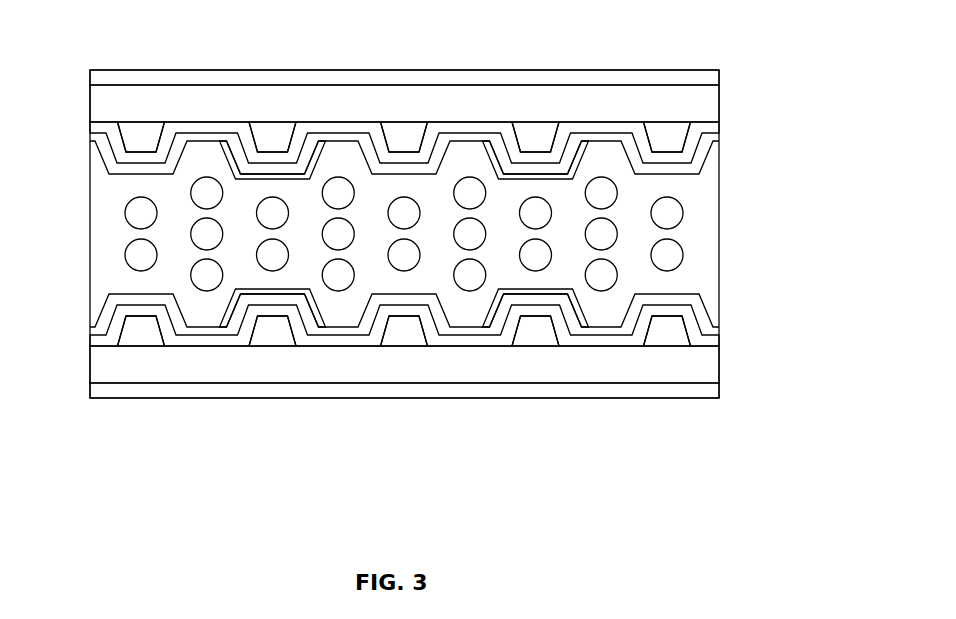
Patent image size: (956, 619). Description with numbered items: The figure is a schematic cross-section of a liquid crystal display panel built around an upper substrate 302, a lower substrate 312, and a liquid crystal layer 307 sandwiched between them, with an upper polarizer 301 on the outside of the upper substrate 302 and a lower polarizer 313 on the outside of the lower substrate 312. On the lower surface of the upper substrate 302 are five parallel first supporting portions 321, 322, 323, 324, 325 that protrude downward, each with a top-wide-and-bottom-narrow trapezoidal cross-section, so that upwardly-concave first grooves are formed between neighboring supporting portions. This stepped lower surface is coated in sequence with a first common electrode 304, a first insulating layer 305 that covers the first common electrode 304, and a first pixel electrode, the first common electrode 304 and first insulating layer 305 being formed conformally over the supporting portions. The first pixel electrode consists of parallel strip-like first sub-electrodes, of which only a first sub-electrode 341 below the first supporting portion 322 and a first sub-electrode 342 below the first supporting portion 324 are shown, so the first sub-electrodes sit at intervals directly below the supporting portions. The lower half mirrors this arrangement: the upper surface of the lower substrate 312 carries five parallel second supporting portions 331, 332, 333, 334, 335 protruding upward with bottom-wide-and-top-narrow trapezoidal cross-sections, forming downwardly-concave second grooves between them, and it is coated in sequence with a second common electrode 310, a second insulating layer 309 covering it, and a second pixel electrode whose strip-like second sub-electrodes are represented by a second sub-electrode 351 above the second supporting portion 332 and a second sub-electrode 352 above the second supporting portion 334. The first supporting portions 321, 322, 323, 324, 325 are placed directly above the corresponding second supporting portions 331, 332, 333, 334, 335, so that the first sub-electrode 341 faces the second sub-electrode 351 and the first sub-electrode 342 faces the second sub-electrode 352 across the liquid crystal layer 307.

The upper polarizer 301 is at (721, 73).
The upper substrate 302 is at (721, 100).
The first common electrode 304 is at (721, 125).
The first insulating layer 305 is at (721, 135).
The liquid crystal layer 307 is at (683, 253).
The second insulating layer 309 is at (721, 332).
The second common electrode 310 is at (721, 343).
The lower substrate 312 is at (721, 365).
The lower polarizer 313 is at (721, 392).
The first supporting portion 321 is at (142, 130).
The first supporting portion 322 is at (282, 130).
The first supporting portion 323 is at (404, 130).
The first supporting portion 324 is at (538, 130).
The first supporting portion 325 is at (665, 130).
The second supporting portion 331 is at (140, 333).
The second supporting portion 332 is at (277, 333).
The second supporting portion 333 is at (405, 333).
The second supporting portion 334 is at (537, 333).
The second supporting portion 335 is at (667, 333).
The first sub-electrode 341 is at (235, 155).
The first sub-electrode 342 is at (578, 155).
The second sub-electrode 351 is at (236, 309).
The second sub-electrode 352 is at (578, 311).